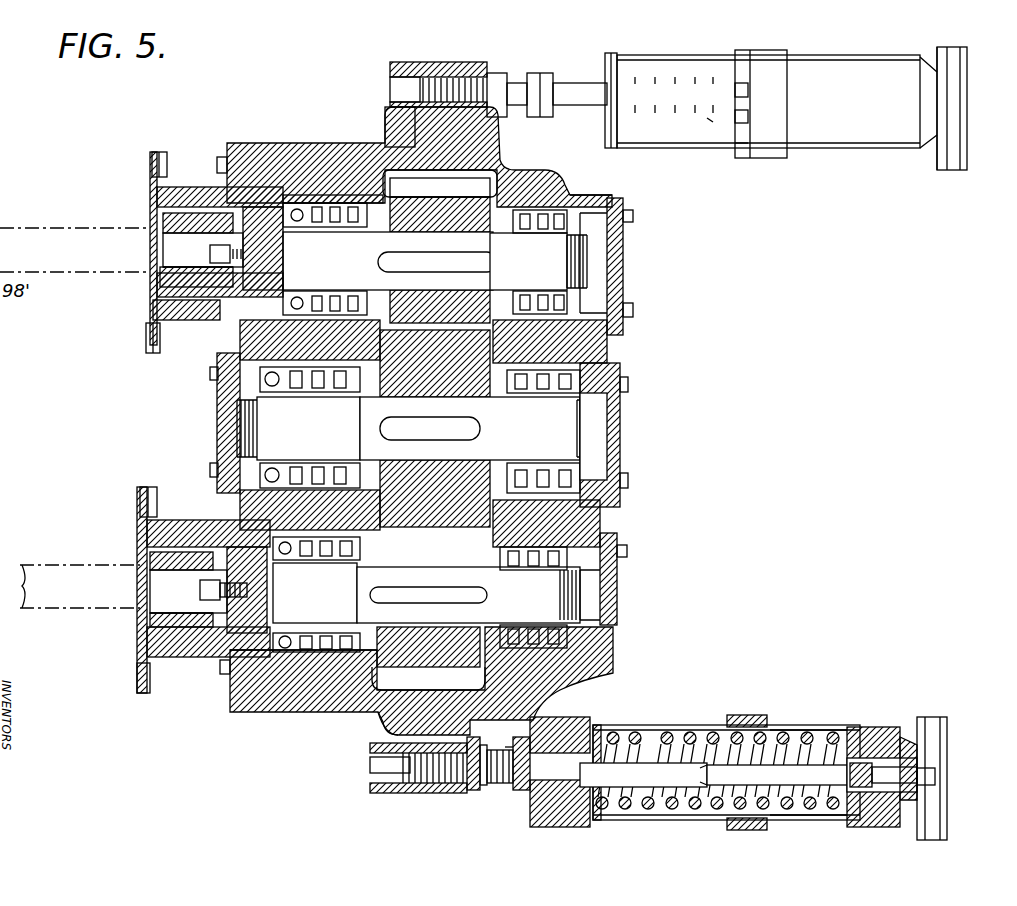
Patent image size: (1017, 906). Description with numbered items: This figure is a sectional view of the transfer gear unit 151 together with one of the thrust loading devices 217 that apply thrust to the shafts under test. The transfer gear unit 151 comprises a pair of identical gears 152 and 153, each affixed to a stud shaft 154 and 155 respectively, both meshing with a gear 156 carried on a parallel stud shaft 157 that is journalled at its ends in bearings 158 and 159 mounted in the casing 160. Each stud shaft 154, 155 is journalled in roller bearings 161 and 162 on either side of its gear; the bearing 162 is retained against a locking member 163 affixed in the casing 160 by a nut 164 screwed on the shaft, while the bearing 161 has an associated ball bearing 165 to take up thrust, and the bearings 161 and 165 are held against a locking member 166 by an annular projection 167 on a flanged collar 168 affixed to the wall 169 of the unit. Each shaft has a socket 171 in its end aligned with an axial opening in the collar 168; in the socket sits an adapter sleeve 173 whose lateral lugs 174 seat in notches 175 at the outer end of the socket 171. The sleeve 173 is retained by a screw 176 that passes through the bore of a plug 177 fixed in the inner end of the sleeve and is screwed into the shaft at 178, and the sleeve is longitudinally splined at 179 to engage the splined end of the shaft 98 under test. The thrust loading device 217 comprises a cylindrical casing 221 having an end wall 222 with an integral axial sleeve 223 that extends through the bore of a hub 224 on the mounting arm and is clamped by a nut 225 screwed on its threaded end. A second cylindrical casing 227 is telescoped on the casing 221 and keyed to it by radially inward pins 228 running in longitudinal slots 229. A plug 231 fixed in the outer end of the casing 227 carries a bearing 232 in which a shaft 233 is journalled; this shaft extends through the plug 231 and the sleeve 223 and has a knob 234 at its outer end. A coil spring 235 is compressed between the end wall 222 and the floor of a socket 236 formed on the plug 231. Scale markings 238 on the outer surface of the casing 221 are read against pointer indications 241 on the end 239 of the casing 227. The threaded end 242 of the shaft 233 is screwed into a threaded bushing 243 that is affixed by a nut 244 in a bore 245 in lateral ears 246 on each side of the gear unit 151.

The shaft under test 98 is at (50, 565).
The transfer gear unit 151 is at (574, 190).
The gear 152 is at (482, 620).
The gear 153 is at (480, 212).
The stud shaft 154 is at (322, 640).
The stud shaft 155 is at (400, 235).
The gear 156 is at (462, 388).
The stud shaft 157 is at (563, 437).
The bearing 158 is at (307, 383).
The bearing 159 is at (580, 383).
The casing 160 is at (258, 678).
The bearing 161 is at (342, 228).
The bearing 162 is at (527, 228).
The locking member 163 is at (545, 175).
The nut 164 is at (590, 300).
The ball bearing 165 is at (308, 203).
The locking member 166 is at (398, 140).
The annular projection 167 is at (290, 195).
The flanged collar 168 is at (180, 187).
The wall 169 is at (253, 147).
The socket 171 is at (220, 207).
The sleeve 173 is at (185, 237).
The lateral lugs 174 is at (165, 195).
The notches 175 is at (185, 222).
The screw 176 is at (240, 592).
The plug 177 is at (210, 525).
The threaded portion of shaft 178 is at (262, 577).
The longitudinal splines 179 is at (175, 265).
The thrust loading device 217 is at (830, 135).
The cylindrical casing 221 is at (603, 724).
The wall 222 is at (557, 823).
The axial sleeve 223 is at (590, 717).
The hub 224 is at (533, 800).
The nut 225 is at (510, 745).
The second cylindrical casing 227 is at (816, 728).
The pins 228 is at (730, 725).
The longitudinal slots 229 is at (680, 727).
The plug 231 is at (875, 740).
The bearing 232 is at (908, 740).
The shaft 233 is at (938, 780).
The knob 234 is at (950, 722).
The coil spring 235 is at (703, 727).
The socket 236 is at (832, 742).
The scale markings 238 is at (710, 120).
The end of casing 239 is at (742, 143).
The pointer indications 241 is at (742, 87).
The threaded end of shaft 242 is at (372, 762).
The threaded bushing 243 is at (410, 793).
The nut 244 is at (473, 787).
The bore 245 is at (393, 727).
The lateral ears 246 is at (393, 80).